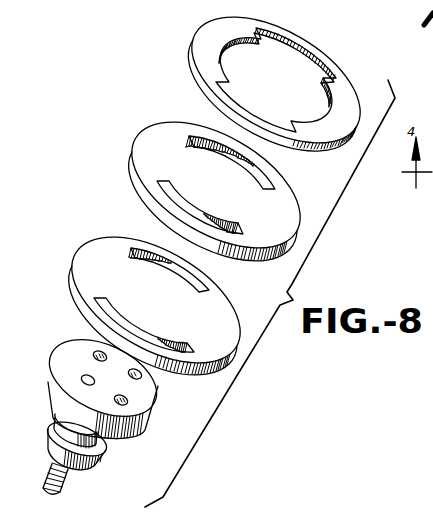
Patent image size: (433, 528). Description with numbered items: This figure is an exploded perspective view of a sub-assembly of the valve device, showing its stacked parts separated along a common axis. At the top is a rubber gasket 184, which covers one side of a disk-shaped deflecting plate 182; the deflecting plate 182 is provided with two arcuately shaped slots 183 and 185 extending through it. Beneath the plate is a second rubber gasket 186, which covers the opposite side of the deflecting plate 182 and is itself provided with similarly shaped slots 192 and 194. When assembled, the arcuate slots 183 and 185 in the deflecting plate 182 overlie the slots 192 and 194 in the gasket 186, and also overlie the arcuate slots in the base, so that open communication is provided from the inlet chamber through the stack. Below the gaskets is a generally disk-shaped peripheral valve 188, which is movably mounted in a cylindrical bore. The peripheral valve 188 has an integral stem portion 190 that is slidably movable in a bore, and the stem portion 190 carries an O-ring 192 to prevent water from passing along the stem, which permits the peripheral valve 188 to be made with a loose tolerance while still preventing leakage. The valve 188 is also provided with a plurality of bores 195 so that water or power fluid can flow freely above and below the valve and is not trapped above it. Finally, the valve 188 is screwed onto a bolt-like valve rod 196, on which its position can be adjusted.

The deflecting plate 182 is at (246, 260).
The arcuate slot 183 is at (266, 182).
The rubber gasket 184 is at (338, 104).
The arcuate slot 185 is at (180, 200).
The rubber gasket 186 is at (95, 250).
The peripheral valve 188 is at (152, 418).
The stem portion 190 is at (100, 441).
The slot / O-ring 192 is at (146, 252).
The slot 194 is at (117, 313).
The bores 195 is at (100, 355).
The valve rod 196 is at (62, 483).